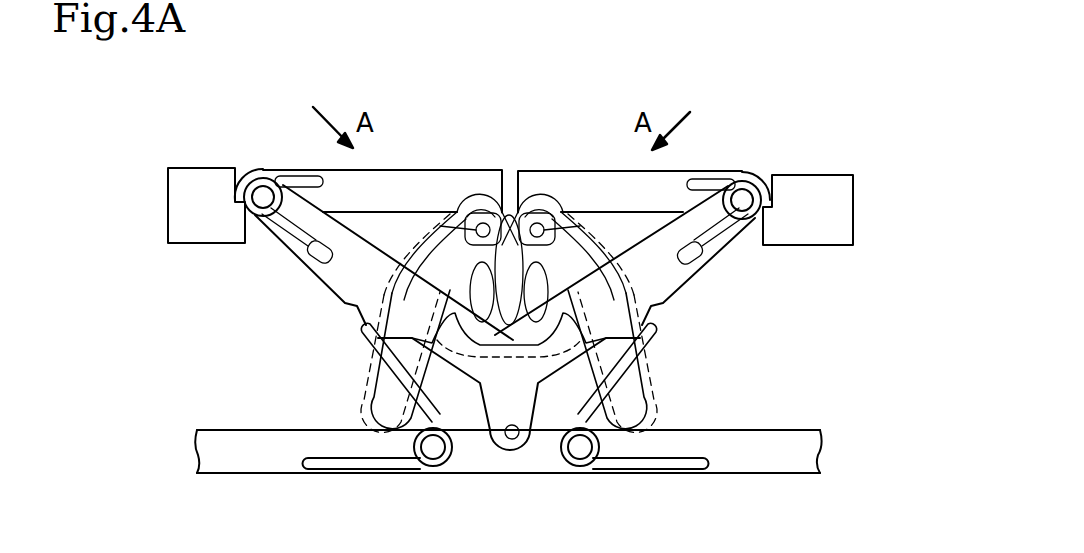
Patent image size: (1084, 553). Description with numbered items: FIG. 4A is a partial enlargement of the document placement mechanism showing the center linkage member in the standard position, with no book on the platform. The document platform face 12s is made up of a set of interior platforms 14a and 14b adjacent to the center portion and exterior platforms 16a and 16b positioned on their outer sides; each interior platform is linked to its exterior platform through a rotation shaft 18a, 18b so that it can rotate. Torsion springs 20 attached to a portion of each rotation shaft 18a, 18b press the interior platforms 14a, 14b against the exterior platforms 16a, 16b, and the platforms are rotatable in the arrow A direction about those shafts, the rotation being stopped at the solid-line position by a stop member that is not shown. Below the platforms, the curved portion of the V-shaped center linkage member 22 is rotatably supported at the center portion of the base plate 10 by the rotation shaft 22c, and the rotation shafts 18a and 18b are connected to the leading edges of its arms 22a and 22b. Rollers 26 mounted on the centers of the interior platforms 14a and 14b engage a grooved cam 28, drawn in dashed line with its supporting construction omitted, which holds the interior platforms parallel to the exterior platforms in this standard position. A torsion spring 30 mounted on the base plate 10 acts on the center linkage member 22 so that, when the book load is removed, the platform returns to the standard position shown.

The base plate 10 is at (765, 463).
The document platform face 12s is at (422, 168).
The interior platform 14a is at (480, 180).
The interior platform 14b is at (550, 178).
The exterior platform 16a is at (200, 185).
The exterior platform 16b is at (822, 185).
The rotation shaft 18a is at (263, 195).
The rotation shaft 18b is at (743, 200).
The torsion spring 20 is at (283, 240).
The center linkage member 22 is at (493, 408).
The arm 22a is at (337, 277).
The arm 22b is at (683, 283).
The rotation shaft 22c is at (512, 440).
The roller 26 is at (445, 224).
The grooved cam 28 is at (367, 362).
The torsion spring 30 is at (368, 465).